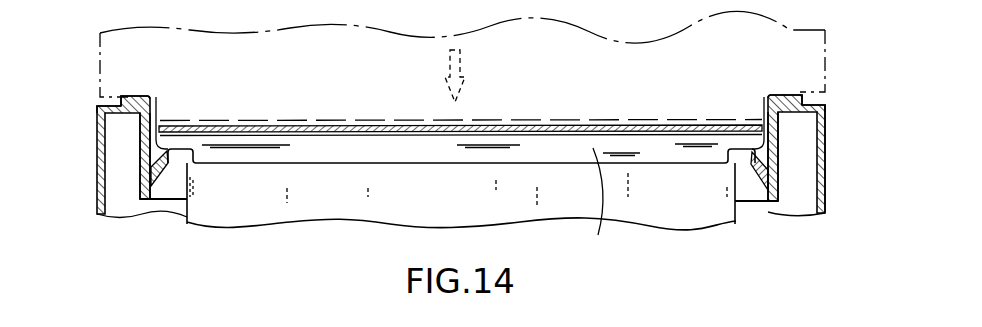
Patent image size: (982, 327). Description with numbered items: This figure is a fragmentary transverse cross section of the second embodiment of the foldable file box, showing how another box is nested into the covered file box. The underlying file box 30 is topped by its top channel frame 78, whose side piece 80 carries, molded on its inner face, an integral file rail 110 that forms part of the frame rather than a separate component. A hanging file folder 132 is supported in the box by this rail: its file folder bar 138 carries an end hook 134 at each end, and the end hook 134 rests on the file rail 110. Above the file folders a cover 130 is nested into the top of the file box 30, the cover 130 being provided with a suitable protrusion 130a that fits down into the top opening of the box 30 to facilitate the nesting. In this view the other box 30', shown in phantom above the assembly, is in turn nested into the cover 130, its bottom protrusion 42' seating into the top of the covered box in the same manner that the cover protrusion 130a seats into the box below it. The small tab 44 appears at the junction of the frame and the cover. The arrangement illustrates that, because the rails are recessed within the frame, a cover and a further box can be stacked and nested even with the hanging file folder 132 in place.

The file box 30 is at (869, 159).
The other box 30' is at (500, 53).
The bottom protrusion 42' is at (461, 103).
The tab 44 is at (163, 102).
The top channel frame 78 is at (92, 107).
The side piece 80 is at (97, 162).
The file rail 110 is at (168, 183).
The cover 130 is at (575, 126).
The protrusion 130a is at (707, 124).
The hanging file folder 132 is at (450, 203).
The end hook 134 is at (774, 143).
The file folder bar 138 is at (606, 209).